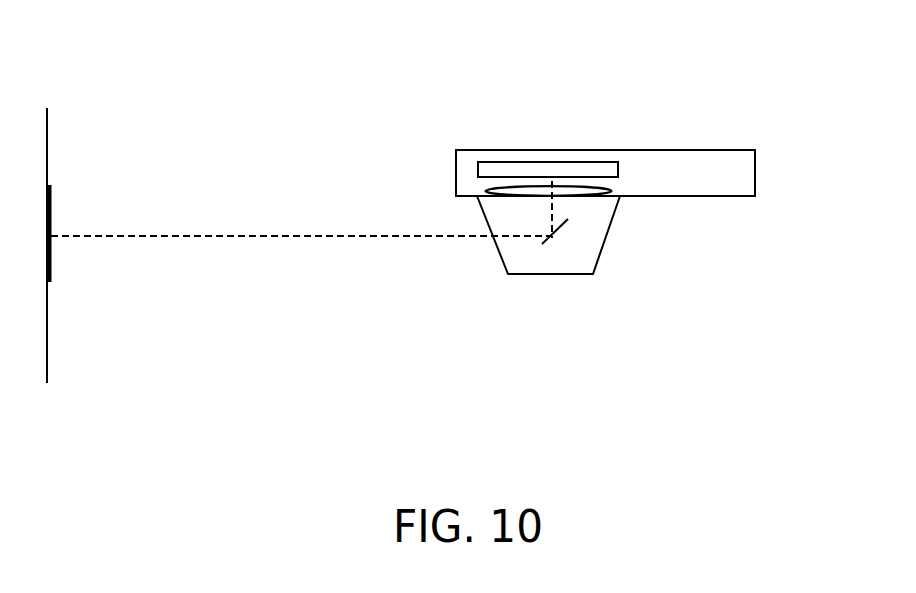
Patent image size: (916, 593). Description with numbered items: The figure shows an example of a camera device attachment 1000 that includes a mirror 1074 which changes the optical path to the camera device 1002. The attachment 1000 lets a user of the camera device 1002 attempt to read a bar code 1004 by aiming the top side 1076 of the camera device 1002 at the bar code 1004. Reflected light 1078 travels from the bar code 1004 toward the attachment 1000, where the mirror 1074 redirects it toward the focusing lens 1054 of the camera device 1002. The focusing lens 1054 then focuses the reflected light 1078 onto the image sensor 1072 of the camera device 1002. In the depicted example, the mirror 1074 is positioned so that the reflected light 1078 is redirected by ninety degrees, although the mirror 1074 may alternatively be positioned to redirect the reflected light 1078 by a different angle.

The camera device attachment 1000 is at (515, 274).
The camera device 1002 is at (708, 198).
The bar code 1004 is at (52, 264).
The focusing lens 1054 is at (512, 186).
The image sensor 1072 is at (602, 178).
The mirror 1074 is at (568, 233).
The top side 1076 is at (456, 172).
The reflected light 1078 is at (360, 240).